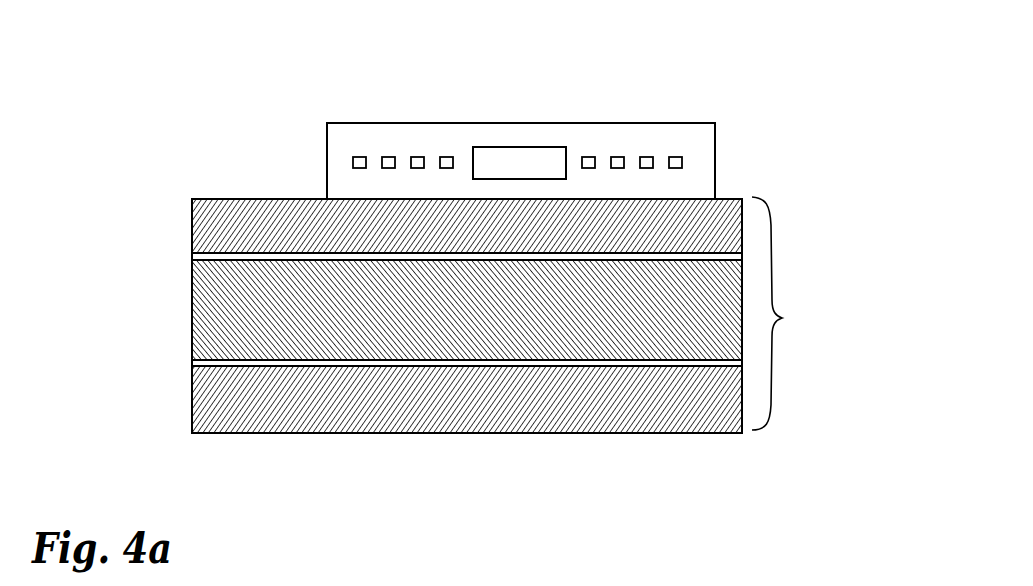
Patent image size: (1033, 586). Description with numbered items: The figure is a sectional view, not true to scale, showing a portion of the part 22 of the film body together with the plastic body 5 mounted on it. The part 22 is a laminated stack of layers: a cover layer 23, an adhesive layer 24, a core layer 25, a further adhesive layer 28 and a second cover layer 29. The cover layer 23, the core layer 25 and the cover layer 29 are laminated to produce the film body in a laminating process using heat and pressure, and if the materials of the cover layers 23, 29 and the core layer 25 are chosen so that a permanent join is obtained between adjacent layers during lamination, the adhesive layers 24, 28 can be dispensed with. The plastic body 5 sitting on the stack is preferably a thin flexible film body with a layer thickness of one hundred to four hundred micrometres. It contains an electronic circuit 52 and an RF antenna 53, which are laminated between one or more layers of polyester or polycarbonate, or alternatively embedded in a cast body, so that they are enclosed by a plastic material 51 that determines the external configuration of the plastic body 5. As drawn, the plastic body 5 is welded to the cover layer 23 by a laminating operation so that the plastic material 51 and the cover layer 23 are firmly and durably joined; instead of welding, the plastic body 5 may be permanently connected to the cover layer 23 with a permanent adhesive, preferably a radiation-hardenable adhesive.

The part of the film body 22 is at (789, 313).
The cover layer 29 is at (197, 218).
The adhesive layer 28 is at (196, 257).
The core layer 25 is at (203, 302).
The adhesive layer 24 is at (196, 365).
The cover layer 23 is at (200, 410).
The plastic body 5 is at (400, 122).
The RF antenna 53 is at (349, 161).
The electronic circuit 52 is at (522, 162).
The plastic material 51 is at (658, 135).